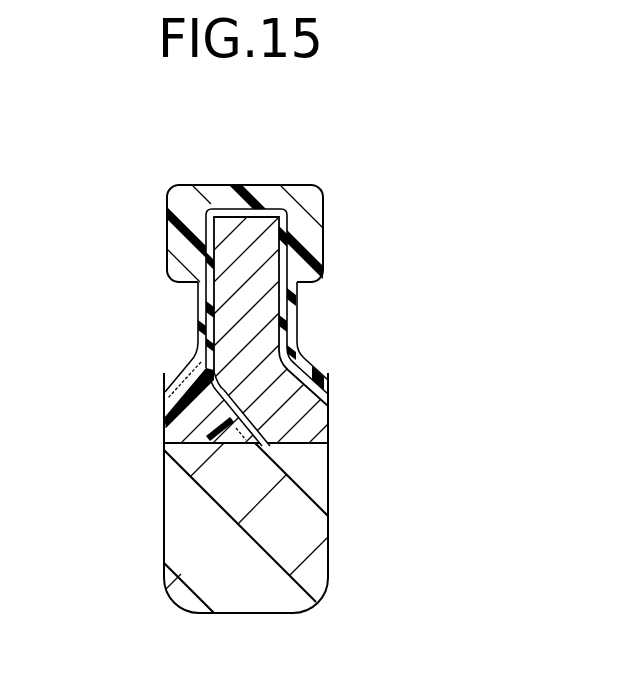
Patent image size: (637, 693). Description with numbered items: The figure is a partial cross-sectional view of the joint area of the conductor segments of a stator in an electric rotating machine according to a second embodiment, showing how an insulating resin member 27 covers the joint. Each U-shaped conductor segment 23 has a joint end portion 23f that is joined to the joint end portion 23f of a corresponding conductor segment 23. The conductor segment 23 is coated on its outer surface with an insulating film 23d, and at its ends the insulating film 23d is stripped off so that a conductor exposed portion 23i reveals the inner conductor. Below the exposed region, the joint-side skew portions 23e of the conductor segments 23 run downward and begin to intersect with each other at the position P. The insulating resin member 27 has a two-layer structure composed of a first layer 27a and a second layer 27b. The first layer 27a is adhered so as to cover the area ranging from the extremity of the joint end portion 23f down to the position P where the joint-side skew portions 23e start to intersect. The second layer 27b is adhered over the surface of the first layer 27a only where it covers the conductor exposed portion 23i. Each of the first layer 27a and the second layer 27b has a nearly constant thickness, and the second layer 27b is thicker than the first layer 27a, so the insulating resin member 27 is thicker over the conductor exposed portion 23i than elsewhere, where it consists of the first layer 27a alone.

The conductor segment 23 is at (288, 276).
The insulating film 23d is at (194, 318).
The joint-side skew portion 23e is at (198, 540).
The joint end portion 23f is at (223, 240).
The conductor exposed portion 23i is at (207, 262).
The insulating resin member 27 is at (330, 233).
The first layer 27a is at (287, 262).
The second layer 27b is at (305, 218).
The position P is at (150, 449).